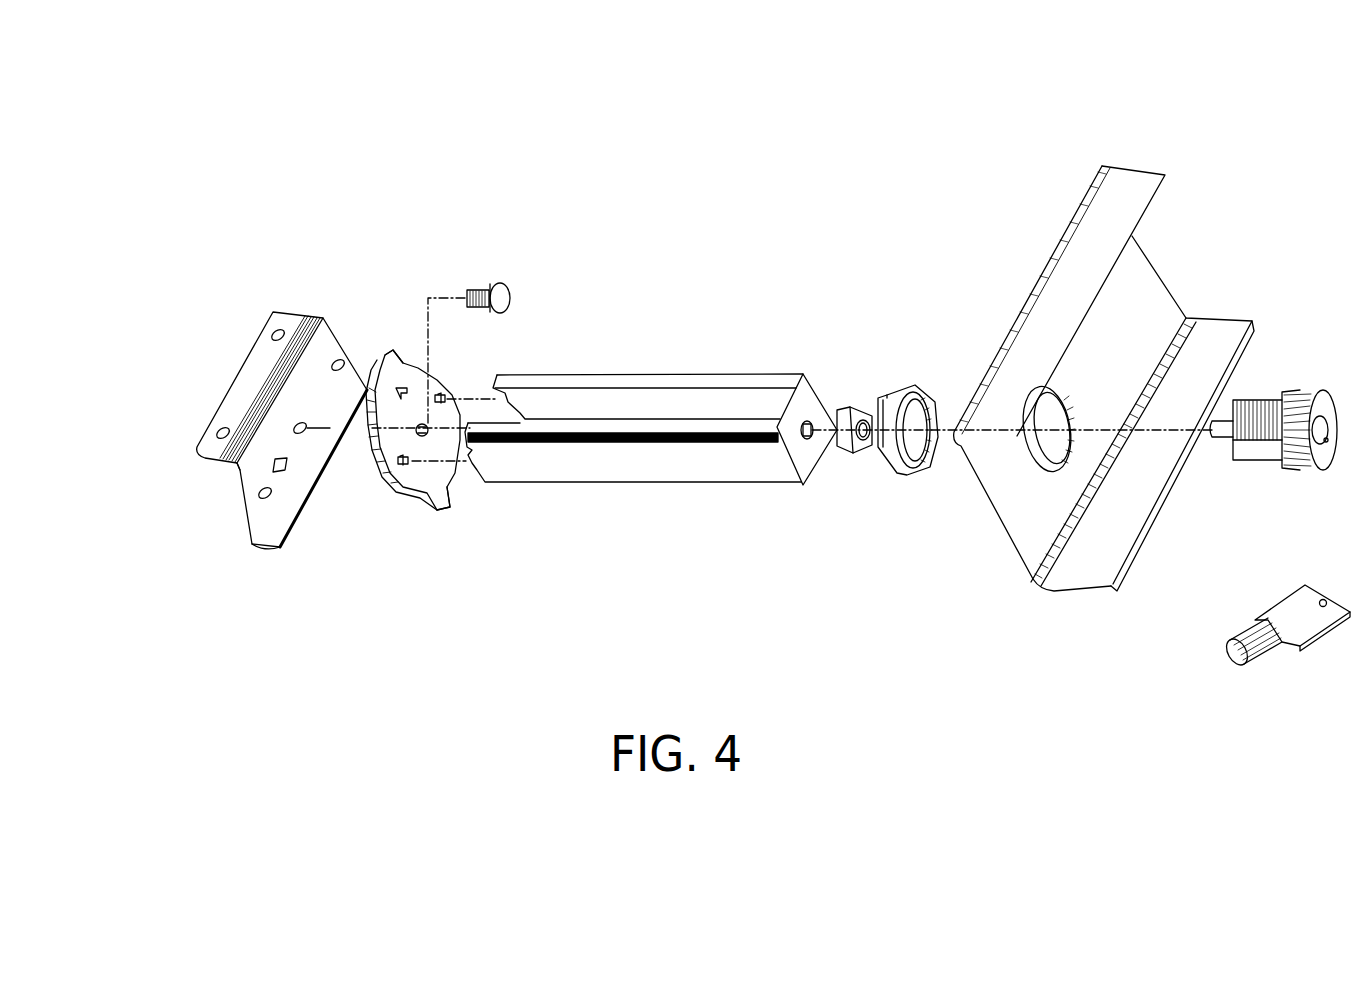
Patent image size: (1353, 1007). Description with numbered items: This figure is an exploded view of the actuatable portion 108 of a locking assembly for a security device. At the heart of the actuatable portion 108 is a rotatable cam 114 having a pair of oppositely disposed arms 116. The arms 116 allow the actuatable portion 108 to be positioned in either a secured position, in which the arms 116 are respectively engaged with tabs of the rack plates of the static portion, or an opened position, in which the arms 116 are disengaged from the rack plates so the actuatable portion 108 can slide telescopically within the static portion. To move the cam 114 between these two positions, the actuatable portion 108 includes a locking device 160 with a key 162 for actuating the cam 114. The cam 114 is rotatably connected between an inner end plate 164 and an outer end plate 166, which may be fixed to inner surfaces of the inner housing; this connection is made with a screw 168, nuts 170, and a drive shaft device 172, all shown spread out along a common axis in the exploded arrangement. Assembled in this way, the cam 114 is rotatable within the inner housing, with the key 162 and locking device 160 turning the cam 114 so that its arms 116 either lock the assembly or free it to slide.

The actuatable portion 108 is at (863, 208).
The rotatable cam 114 is at (385, 495).
The arms 116 is at (393, 350).
The locking device 160 is at (1291, 373).
The key 162 is at (1271, 680).
The inner end plate 164 is at (237, 381).
The outer end plate 166 is at (1102, 207).
The screw 168 is at (510, 287).
The nuts 170 is at (853, 410).
The drive shaft device 172 is at (645, 352).